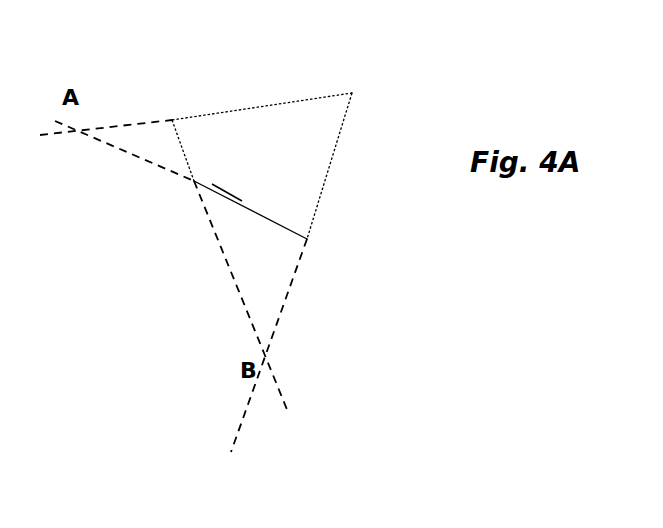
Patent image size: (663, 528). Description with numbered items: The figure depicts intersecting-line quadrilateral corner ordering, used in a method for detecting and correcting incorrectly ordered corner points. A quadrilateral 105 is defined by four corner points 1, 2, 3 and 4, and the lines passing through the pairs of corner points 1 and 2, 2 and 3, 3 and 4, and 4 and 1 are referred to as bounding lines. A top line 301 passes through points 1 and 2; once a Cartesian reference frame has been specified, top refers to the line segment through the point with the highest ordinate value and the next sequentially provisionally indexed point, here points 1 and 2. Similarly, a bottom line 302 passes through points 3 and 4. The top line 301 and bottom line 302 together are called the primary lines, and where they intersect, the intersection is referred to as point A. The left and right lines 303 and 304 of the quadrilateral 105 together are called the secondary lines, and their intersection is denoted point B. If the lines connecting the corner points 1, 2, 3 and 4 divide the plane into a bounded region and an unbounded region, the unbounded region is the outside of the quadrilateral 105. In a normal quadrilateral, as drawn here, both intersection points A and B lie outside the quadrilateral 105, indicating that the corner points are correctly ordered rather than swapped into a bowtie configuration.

The quadrilateral 105 is at (341, 168).
The top line 301 is at (225, 112).
The bottom line 302 is at (238, 203).
The left line 303 is at (183, 147).
The right line 304 is at (345, 132).
The corner point 1 is at (169, 100).
The corner point 2 is at (367, 78).
The corner point 3 is at (322, 259).
The corner point 4 is at (180, 212).